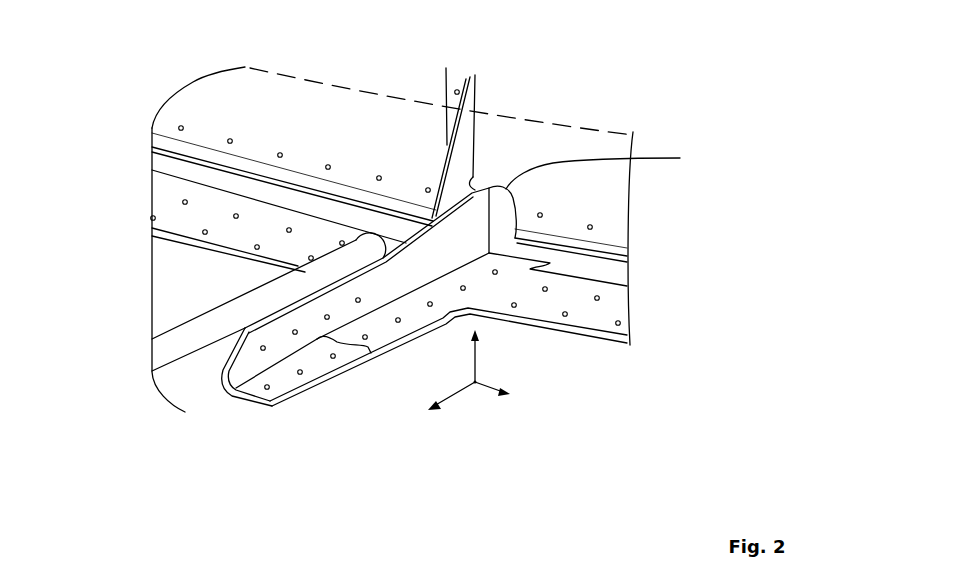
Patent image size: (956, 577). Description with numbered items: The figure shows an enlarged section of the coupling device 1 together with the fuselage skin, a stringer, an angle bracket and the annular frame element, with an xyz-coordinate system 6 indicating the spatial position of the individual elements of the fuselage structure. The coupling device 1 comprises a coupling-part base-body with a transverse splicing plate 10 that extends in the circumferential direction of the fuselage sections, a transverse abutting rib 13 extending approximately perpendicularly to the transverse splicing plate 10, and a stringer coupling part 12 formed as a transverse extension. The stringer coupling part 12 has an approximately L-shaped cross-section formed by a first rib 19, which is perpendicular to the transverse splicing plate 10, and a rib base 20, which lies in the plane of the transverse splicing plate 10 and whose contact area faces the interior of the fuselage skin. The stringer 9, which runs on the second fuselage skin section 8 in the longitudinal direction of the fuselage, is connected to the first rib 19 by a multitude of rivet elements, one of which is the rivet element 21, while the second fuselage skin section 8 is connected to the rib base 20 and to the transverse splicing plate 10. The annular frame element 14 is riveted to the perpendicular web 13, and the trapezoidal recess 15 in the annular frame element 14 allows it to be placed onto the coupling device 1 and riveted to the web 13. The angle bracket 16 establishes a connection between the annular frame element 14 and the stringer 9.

The coupling device 1 is at (132, 175).
The xyz-coordinate system 6 is at (475, 382).
The second fuselage skin section 8 is at (600, 410).
The stringer 9 is at (192, 337).
The transverse splicing plate 10 is at (612, 300).
The stringer coupling part 12 is at (208, 376).
The transverse abutting rib 13 is at (644, 223).
The annular frame element 14 is at (587, 100).
The recess 15 is at (585, 196).
The angle bracket 16 is at (463, 127).
The rib of the stringer coupling part 19 is at (270, 332).
The rib base of the stringer coupling part 20 is at (288, 383).
The rivet element 21 is at (268, 390).